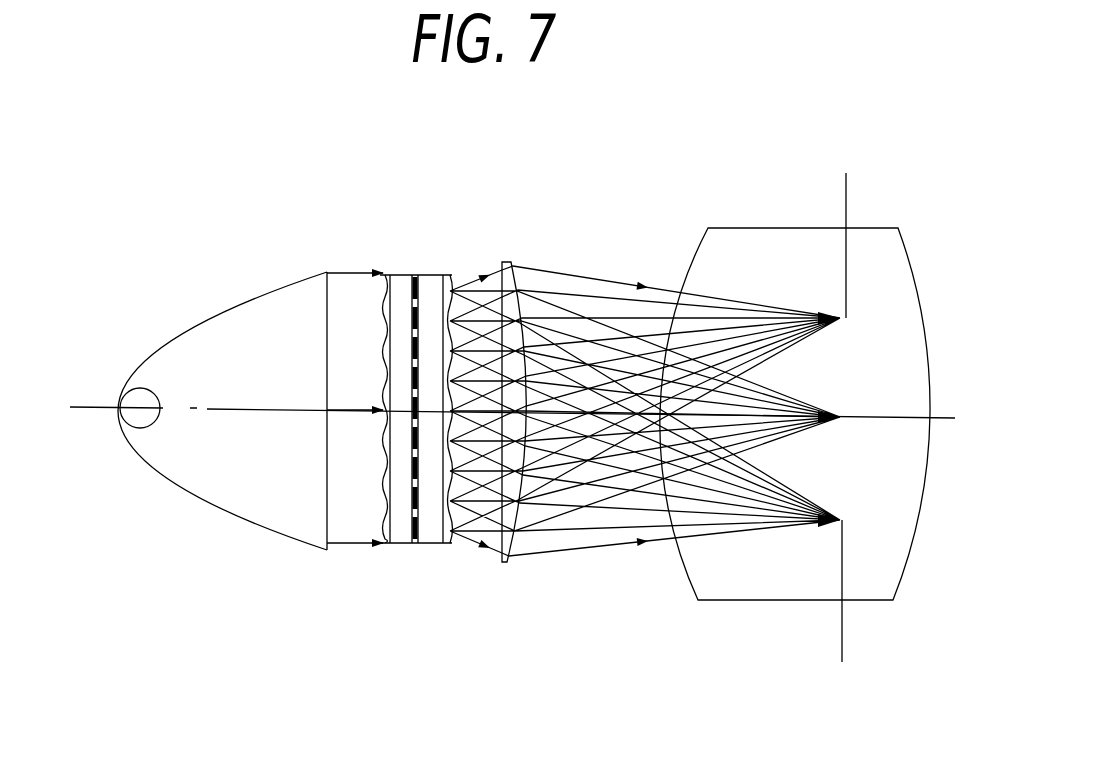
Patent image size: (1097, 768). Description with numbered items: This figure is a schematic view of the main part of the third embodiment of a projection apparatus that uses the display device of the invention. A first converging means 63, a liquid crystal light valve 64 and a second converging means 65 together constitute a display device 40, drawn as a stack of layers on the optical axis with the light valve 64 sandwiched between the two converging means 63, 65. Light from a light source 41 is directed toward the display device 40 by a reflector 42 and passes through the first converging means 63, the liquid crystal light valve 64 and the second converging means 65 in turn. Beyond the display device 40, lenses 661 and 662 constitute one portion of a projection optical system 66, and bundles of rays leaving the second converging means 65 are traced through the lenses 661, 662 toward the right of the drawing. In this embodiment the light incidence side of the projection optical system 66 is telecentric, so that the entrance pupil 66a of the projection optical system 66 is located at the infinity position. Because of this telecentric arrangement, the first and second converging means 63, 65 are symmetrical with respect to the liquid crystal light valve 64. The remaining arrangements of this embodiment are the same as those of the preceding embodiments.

The display device 40 is at (410, 344).
The light source lamp 41 is at (137, 430).
The parabolic reflector 42 is at (223, 305).
The first converging means 63 is at (387, 277).
The liquid crystal light valve 64 is at (417, 277).
The second converging means 65 is at (457, 367).
The projection optical system 66 is at (716, 356).
The lens 661 is at (507, 262).
The lens 662 is at (795, 382).
The entrance pupil 66a is at (847, 188).